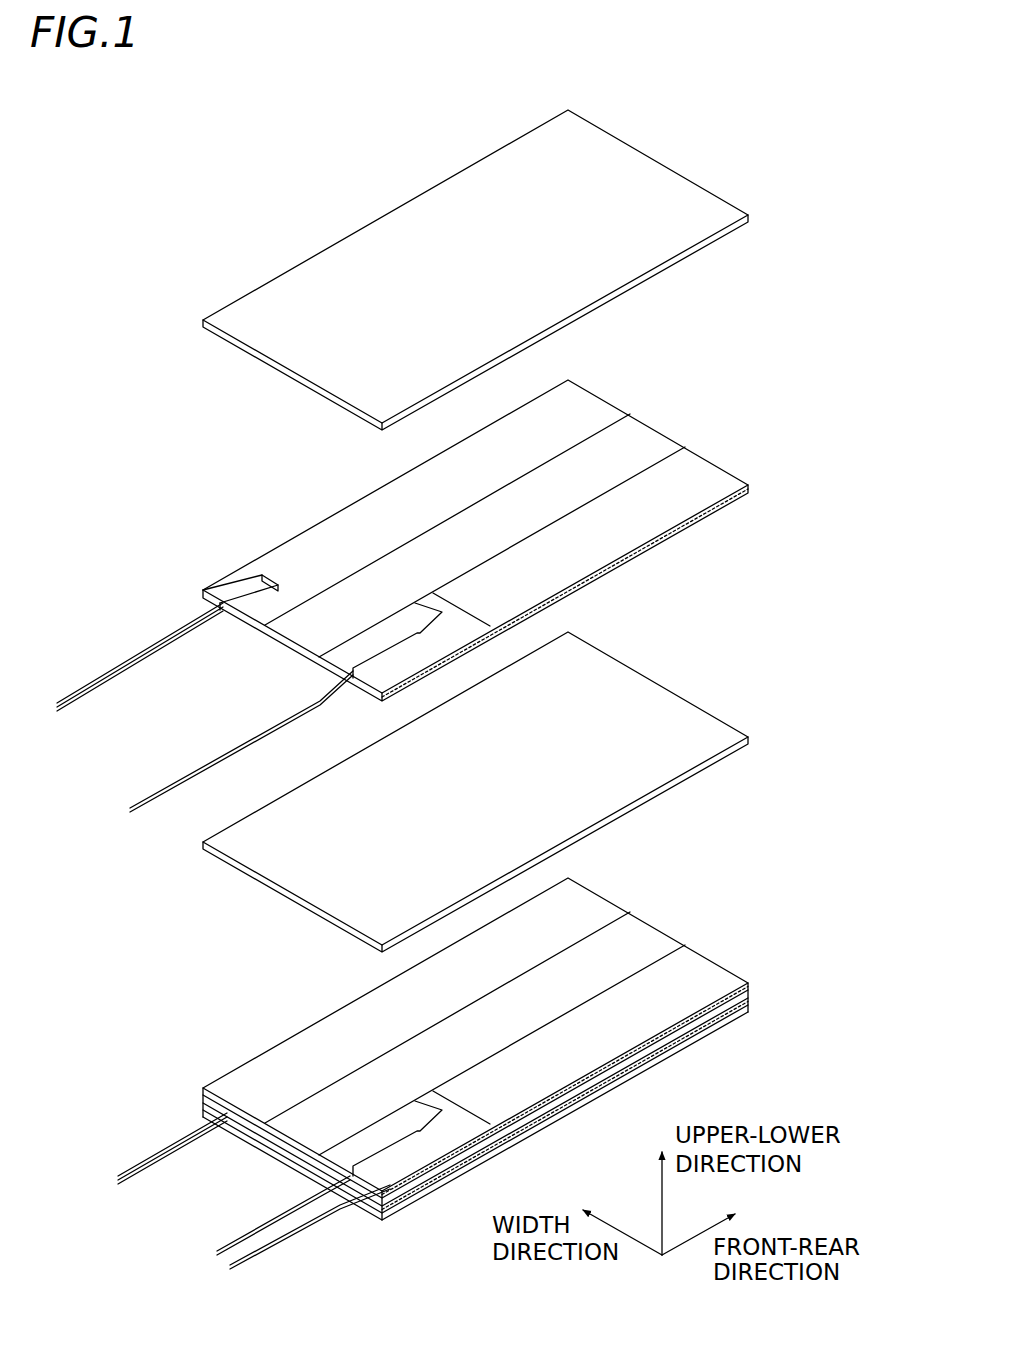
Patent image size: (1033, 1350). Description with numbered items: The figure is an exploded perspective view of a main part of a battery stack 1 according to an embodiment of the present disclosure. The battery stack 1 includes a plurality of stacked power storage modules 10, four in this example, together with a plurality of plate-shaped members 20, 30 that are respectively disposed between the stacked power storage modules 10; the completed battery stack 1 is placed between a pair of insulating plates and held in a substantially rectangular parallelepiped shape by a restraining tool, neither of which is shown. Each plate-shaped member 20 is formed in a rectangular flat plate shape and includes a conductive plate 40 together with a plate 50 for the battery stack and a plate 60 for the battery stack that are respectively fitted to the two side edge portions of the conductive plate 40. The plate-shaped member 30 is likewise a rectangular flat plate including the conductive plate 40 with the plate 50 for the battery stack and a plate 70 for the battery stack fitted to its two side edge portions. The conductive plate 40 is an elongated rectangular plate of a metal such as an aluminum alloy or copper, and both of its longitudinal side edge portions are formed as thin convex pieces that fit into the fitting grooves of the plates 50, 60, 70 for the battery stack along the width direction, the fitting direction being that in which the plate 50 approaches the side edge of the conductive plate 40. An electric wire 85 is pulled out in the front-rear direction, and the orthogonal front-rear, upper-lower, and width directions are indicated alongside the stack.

The battery stack 1 is at (493, 92).
The power storage module 10 is at (652, 157).
The plate-shaped member 20 is at (633, 412).
The plate-shaped member 30 is at (687, 941).
The conductive plate 40 is at (652, 440).
The plate for the battery stack 50 is at (652, 522).
The plate for the battery stack 60 is at (300, 547).
The plate for the battery stack 70 is at (262, 1067).
The electric wire 85 is at (243, 745).